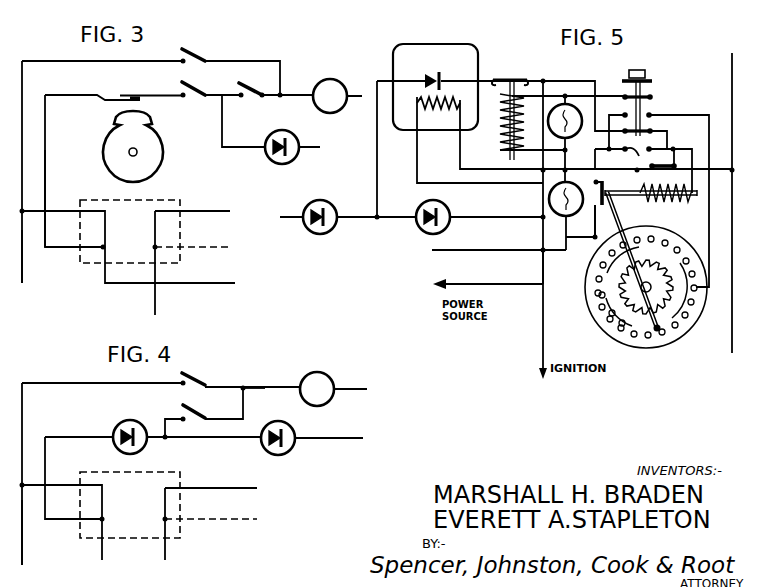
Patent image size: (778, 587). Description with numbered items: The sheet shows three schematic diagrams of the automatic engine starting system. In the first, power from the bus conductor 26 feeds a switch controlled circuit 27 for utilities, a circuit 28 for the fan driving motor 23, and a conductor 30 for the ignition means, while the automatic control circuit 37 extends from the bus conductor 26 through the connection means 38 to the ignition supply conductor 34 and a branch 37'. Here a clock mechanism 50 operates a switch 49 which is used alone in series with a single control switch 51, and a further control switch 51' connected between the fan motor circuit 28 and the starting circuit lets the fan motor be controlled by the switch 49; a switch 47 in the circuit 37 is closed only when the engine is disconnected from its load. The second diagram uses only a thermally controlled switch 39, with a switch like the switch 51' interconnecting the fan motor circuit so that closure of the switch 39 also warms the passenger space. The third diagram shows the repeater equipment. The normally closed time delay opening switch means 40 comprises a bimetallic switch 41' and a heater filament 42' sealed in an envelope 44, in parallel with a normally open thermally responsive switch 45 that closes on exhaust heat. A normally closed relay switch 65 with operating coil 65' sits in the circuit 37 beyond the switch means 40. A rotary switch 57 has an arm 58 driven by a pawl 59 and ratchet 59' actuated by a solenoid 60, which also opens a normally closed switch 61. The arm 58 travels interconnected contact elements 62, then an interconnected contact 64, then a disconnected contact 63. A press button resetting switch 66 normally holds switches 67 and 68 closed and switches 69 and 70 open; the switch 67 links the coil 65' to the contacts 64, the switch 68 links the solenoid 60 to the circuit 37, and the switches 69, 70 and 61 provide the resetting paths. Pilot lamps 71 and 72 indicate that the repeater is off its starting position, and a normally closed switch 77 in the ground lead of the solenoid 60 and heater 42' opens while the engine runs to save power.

In FIG. 3, the fan driving motor 23 is at (330, 90).
In FIG. 4, the fan driving motor 23 is at (320, 387).
In FIG. 3, the bus conductor 26 is at (22, 257).
In FIG. 4, the bus conductor 26 is at (22, 530).
In FIG. 3, the switch controlled circuit 27 is at (195, 54).
In FIG. 4, the switch controlled circuit 27 is at (195, 376).
In FIG. 3, the fan motor circuit 28 is at (290, 96).
In FIG. 4, the fan motor circuit 28 is at (277, 386).
In FIG. 3, the conductor 30 is at (208, 285).
In FIG. 5, the ignition supply conductor 34 is at (543, 267).
In FIG. 3, the control circuit 37 is at (187, 198).
In FIG. 4, the control circuit 37 is at (331, 453).
In FIG. 5, the control circuit 37 is at (410, 217).
In FIG. 3, the conductor 37' is at (194, 230).
In FIG. 3, the connection means 38 is at (145, 213).
In FIG. 4, the connection means 38 is at (147, 484).
In FIG. 4, the thermally controlled switch 39 is at (116, 428).
In FIG. 5, the time delay opening switch means 40 is at (387, 70).
In FIG. 5, the normally closed switch 41' is at (424, 70).
In FIG. 5, the electrical heater filament 42' is at (438, 128).
In FIG. 5, the sealed envelope 44 is at (400, 128).
In FIG. 5, the normally open thermally responsive switch 45 is at (446, 209).
In FIG. 3, the switch 47 is at (299, 141).
In FIG. 4, the switch 47 is at (292, 430).
In FIG. 5, the switch 47 is at (331, 209).
In FIG. 3, the switch 49 is at (133, 93).
In FIG. 3, the clock mechanism 50 is at (157, 152).
In FIG. 3, the control switch 51 is at (193, 104).
In FIG. 3, the control switch 51' is at (257, 83).
In FIG. 4, the control switch 51' is at (205, 407).
In FIG. 5, the rotary switch 57 is at (652, 347).
In FIG. 5, the arm 58 is at (670, 340).
In FIG. 5, the pawl 59 is at (648, 285).
In FIG. 5, the ratchet 59' is at (666, 289).
In FIG. 5, the solenoid 60 is at (655, 203).
In FIG. 5, the normally closed switch 61 is at (598, 203).
In FIG. 5, the contact elements 62 is at (600, 298).
In FIG. 5, the disconnected contact element 63 is at (609, 314).
In FIG. 5, the interconnected contact elements 64 is at (620, 323).
In FIG. 5, the relay switch 65 is at (510, 104).
In FIG. 5, the operating coil 65' is at (498, 130).
In FIG. 5, the resetting switch 66 is at (651, 91).
In FIG. 5, the normally closed switch 67 is at (624, 94).
In FIG. 5, the normally closed switch 68 is at (652, 130).
In FIG. 5, the normally open switch 69 is at (652, 114).
In FIG. 5, the normally open switch 70 is at (632, 159).
In FIG. 5, the pilot lamp 71 is at (572, 105).
In FIG. 5, the pilot lamp 72 is at (549, 199).
In FIG. 5, the normally closed switch 77 is at (672, 163).